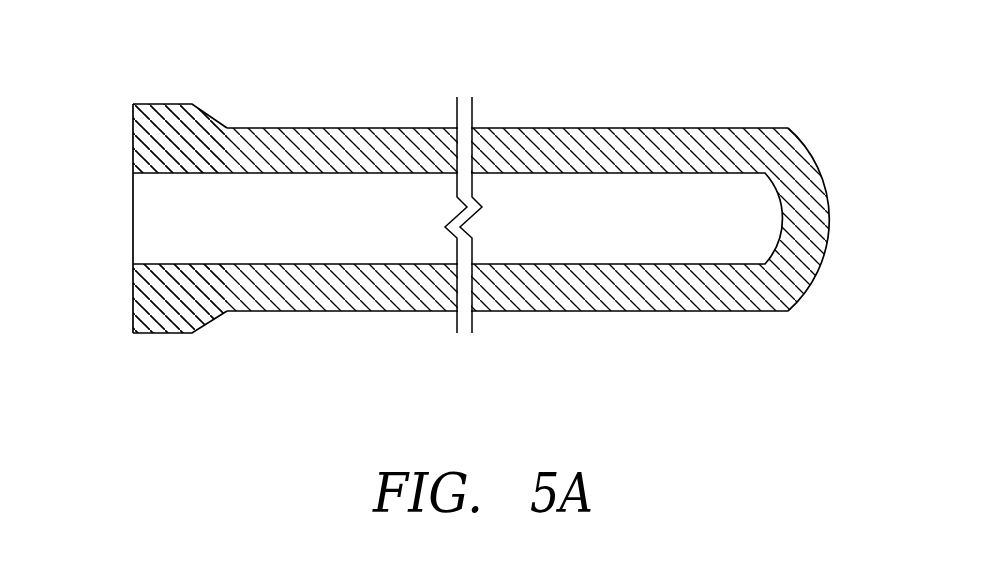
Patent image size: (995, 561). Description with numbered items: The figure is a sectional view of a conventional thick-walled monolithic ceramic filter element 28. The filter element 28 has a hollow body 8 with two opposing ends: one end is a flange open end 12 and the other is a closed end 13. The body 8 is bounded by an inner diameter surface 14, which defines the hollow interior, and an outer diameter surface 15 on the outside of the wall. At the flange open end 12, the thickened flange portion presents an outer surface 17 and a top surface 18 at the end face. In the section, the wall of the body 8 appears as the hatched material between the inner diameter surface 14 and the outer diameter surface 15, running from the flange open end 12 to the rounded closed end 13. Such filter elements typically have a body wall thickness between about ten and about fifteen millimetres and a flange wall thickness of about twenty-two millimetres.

The hollow body 8 is at (475, 196).
The flange open end 12 is at (177, 145).
The closed end 13 is at (830, 200).
The inner diameter surface 14 is at (193, 173).
The outer diameter surface 15 is at (343, 128).
The outer surface 17 is at (163, 104).
The top surface 18 is at (131, 121).
The monolithic ceramic filter element 28 is at (627, 68).